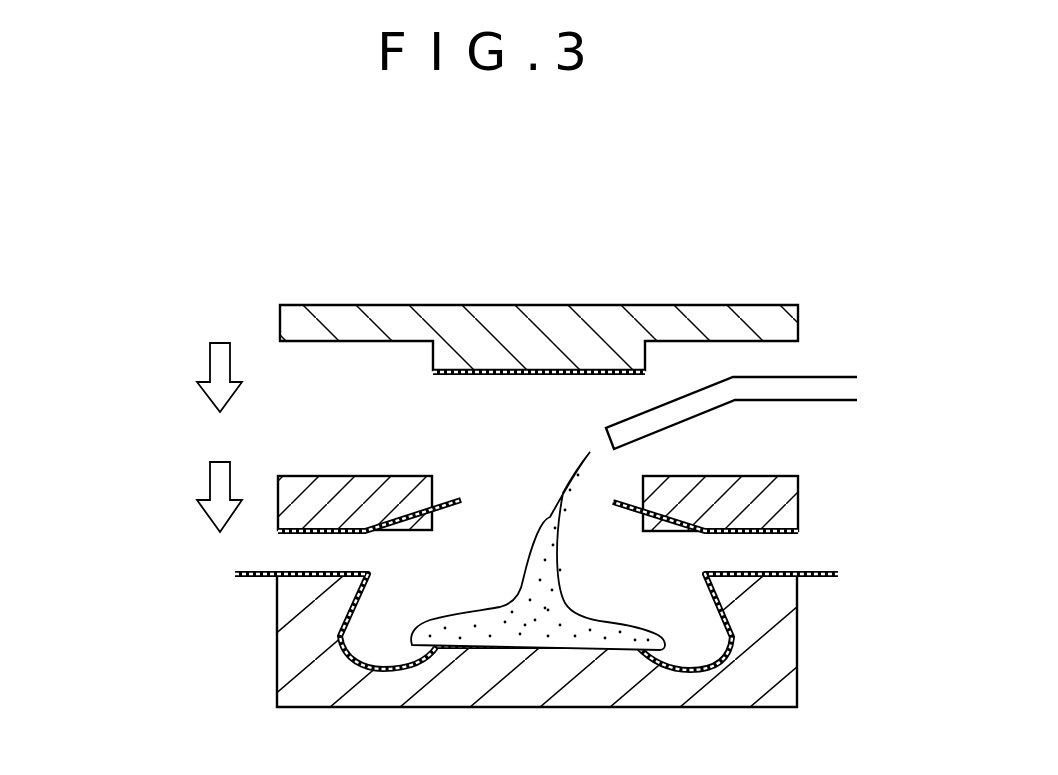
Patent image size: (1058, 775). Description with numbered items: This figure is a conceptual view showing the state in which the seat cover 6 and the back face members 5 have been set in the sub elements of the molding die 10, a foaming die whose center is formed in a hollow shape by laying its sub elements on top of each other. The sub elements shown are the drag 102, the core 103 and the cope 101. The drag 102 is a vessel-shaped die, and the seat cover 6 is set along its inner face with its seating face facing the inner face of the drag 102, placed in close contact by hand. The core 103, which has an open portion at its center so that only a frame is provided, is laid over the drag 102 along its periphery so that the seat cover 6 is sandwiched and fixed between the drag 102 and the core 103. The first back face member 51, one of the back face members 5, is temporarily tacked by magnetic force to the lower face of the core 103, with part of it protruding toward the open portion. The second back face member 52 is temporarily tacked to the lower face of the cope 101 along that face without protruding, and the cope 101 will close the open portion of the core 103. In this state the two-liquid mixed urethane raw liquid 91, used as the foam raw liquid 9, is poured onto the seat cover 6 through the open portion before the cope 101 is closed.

The molding die 10 is at (92, 348).
The cope 101 is at (282, 320).
The drag 102 is at (302, 628).
The core 103 is at (330, 486).
The back face members 5 is at (595, 398).
The first back face member 51 is at (433, 518).
The second back face member 52 is at (505, 377).
The seat cover 6 is at (808, 578).
The foam raw liquid 9 is at (538, 551).
The urethane raw liquid 91 is at (477, 622).